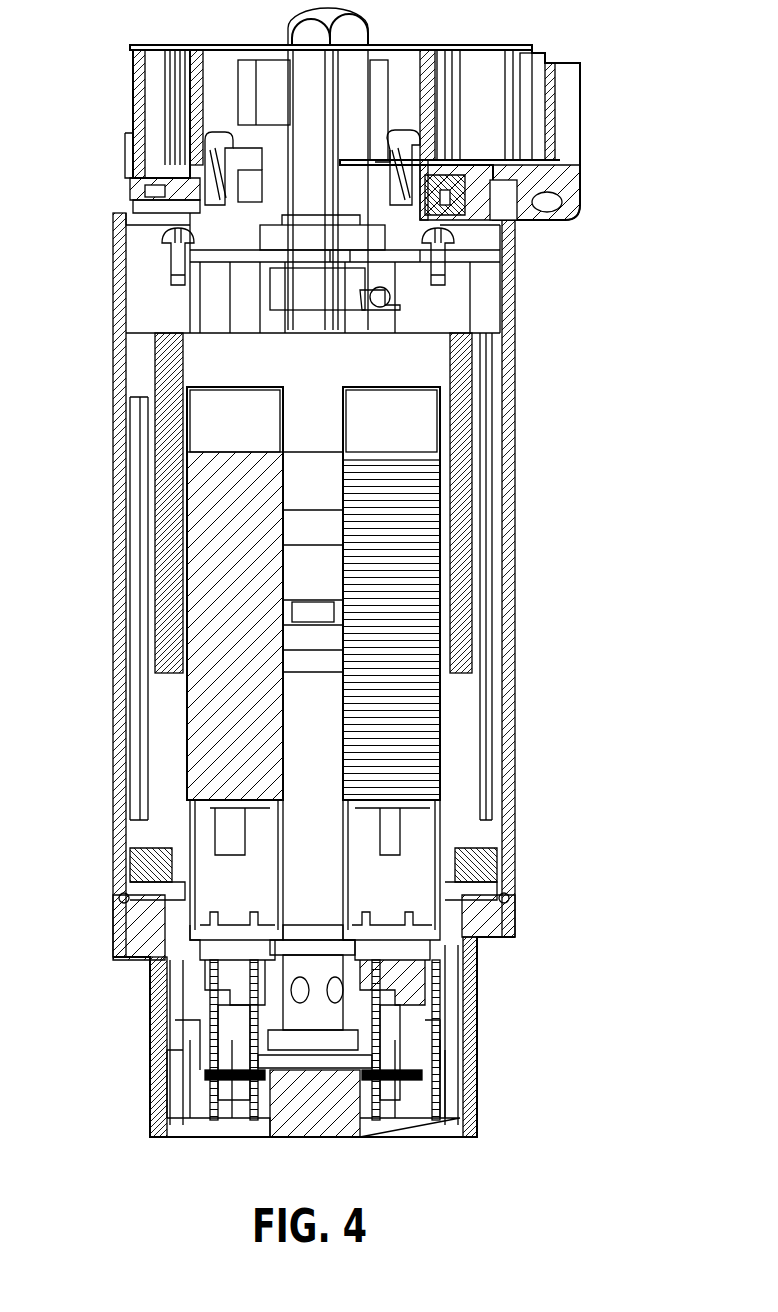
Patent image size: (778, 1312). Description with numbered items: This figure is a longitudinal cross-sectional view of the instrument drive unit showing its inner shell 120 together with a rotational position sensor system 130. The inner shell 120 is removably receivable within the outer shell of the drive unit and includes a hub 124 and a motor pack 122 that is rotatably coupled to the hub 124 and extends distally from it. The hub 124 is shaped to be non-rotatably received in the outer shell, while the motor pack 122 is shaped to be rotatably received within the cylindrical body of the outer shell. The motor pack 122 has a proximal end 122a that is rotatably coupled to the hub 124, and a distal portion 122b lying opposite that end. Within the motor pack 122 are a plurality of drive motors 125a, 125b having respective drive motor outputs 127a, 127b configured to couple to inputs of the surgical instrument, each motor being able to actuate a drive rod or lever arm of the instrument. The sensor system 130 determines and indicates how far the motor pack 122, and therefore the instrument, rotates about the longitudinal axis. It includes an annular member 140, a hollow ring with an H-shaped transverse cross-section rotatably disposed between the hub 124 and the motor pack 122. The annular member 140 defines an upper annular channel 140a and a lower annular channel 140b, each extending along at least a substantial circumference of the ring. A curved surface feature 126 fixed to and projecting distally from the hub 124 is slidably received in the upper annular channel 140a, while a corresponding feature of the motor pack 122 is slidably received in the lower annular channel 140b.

The inner shell 120 is at (583, 336).
The motor pack 122 is at (110, 422).
The proximal end 122a is at (112, 280).
The lower housing portion 122b is at (470, 1065).
The hub 124 is at (593, 136).
The drive motor 125a is at (218, 725).
The drive motor 125b is at (435, 630).
The surface feature 126 is at (450, 192).
The drive motor output 127a is at (240, 836).
The drive motor output 127b is at (390, 830).
The rotational position sensor system 130 is at (414, 125).
The annular member 140 is at (150, 195).
The upper annular channel 140a is at (172, 133).
The lower annular channel 140b is at (165, 218).